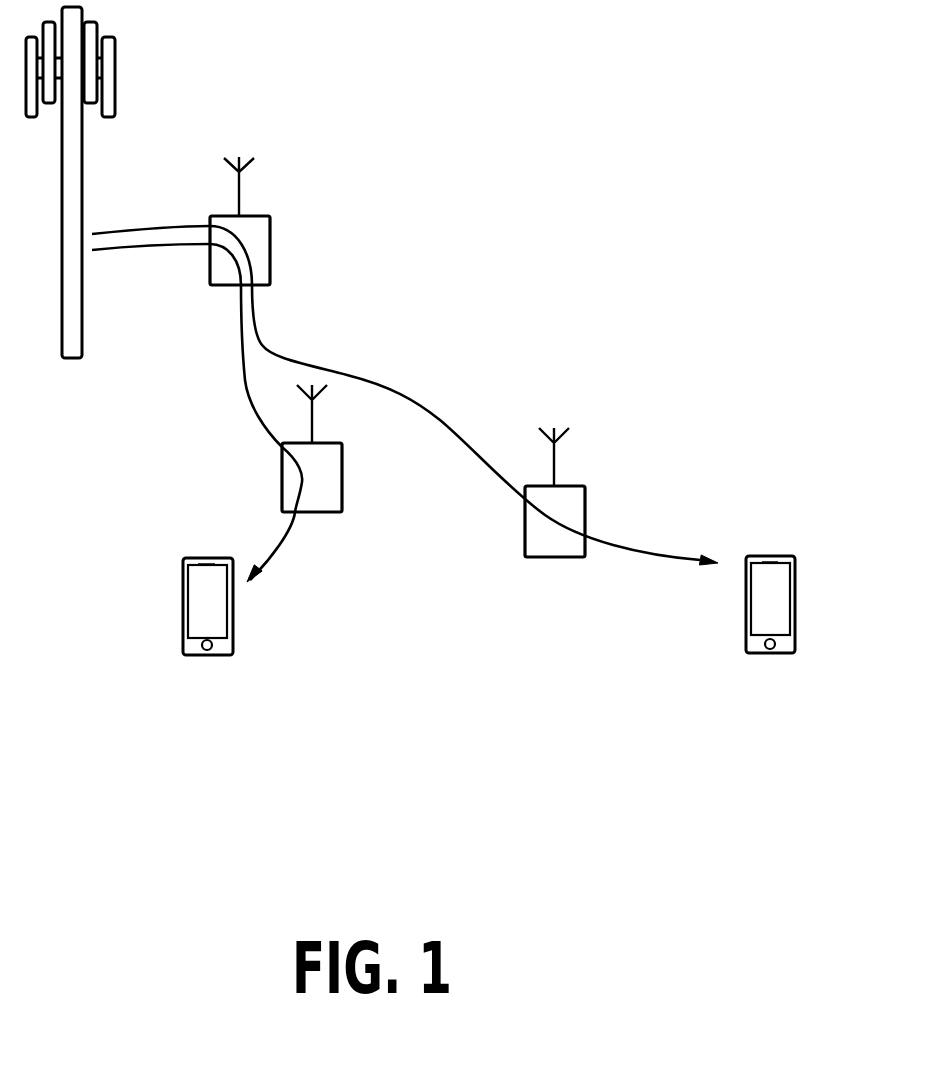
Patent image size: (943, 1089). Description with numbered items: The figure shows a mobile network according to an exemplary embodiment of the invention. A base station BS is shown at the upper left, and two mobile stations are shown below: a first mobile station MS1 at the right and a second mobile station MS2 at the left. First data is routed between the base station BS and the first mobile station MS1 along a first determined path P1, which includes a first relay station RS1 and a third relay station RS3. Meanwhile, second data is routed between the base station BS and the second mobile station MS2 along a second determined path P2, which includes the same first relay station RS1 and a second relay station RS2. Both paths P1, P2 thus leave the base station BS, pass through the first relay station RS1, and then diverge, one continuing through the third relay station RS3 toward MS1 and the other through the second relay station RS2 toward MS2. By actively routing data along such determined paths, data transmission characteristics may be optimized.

The base station BS is at (77, 200).
The first determined path P1 is at (405, 378).
The second determined path P2 is at (197, 413).
The first relay station RS1 is at (263, 239).
The second relay station RS2 is at (339, 469).
The third relay station RS3 is at (581, 511).
The first mobile station MS1 is at (792, 625).
The second mobile station MS2 is at (230, 627).